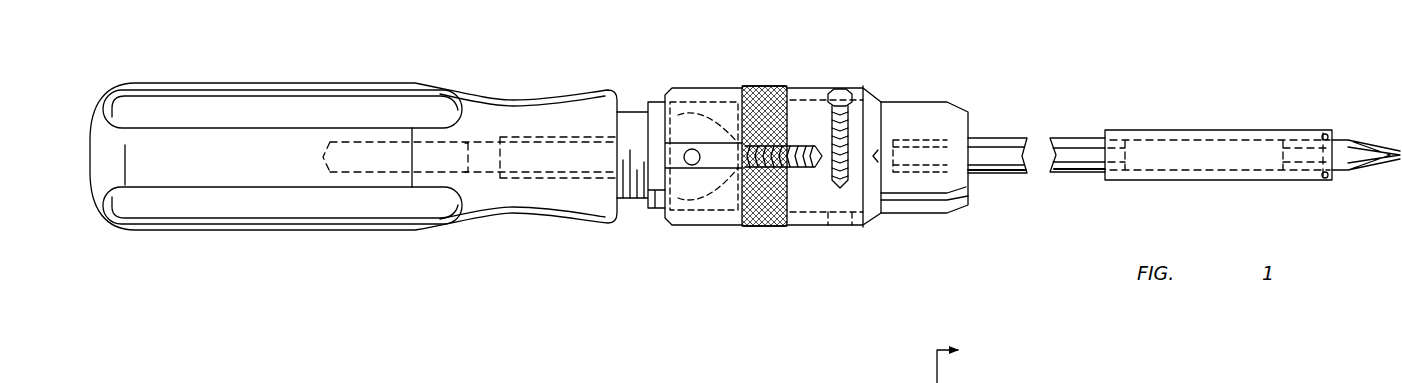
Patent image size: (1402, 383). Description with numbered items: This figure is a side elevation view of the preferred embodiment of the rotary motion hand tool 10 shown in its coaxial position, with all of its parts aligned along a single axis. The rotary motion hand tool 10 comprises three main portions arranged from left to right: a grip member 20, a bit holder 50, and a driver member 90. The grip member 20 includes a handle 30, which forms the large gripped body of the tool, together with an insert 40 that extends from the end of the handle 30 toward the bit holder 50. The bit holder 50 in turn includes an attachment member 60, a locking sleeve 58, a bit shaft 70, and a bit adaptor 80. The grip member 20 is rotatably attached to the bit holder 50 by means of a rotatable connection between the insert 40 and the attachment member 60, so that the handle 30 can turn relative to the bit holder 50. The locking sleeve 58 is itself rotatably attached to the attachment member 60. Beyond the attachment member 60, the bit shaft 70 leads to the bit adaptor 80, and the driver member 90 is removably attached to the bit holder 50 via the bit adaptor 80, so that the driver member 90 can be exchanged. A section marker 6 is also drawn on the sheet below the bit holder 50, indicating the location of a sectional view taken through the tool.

The screwdriver tool 10 is at (883, 250).
The handle 20 is at (182, 80).
The handle grip groove 30 is at (296, 84).
The shaft 40 is at (637, 118).
The bit holder shank 50 is at (1000, 132).
The chuck body 58 is at (870, 88).
The chuck nose 60 is at (920, 101).
The bit shank 70 is at (1077, 140).
The bit sleeve 80 is at (1217, 130).
The bit tip 90 is at (1351, 132).
The section line 6 is at (962, 362).